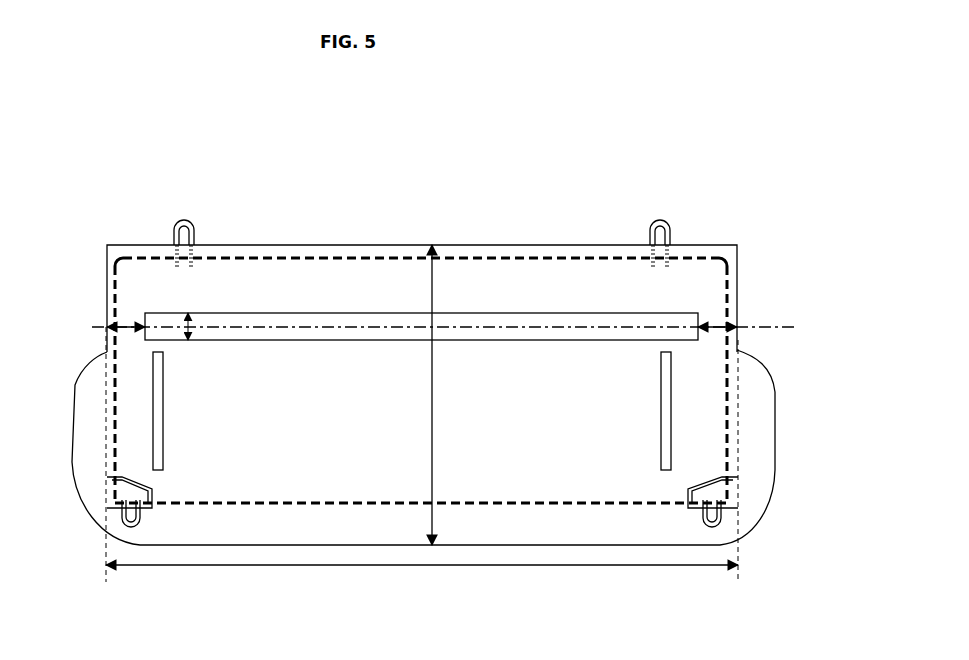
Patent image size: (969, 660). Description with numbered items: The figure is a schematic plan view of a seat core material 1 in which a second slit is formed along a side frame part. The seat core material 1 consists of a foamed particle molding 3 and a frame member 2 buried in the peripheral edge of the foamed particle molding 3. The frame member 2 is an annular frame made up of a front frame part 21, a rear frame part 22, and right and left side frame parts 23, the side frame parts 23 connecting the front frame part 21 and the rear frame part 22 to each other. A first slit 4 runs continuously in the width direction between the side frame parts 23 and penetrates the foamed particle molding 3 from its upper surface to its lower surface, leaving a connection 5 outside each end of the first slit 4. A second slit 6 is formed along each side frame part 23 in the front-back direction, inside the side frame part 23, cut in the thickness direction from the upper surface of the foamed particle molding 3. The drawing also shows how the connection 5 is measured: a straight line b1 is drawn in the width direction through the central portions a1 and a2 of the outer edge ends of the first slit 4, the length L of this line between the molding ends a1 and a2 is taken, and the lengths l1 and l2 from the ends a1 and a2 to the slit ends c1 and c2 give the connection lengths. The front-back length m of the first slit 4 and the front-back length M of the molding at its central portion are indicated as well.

The seat core material 1 is at (602, 226).
The frame member 2 is at (738, 248).
The foamed particle molding 3 is at (552, 445).
The first slit 4 is at (335, 318).
The connection 5 is at (128, 321).
The second slit 6 is at (158, 456).
The front frame part 21 is at (473, 505).
The rear frame part 22 is at (453, 257).
The side frame parts 23 is at (113, 425).
The end of the foamed particle molding a1 is at (107, 326).
The end of the foamed particle molding a2 is at (737, 325).
The straight line b1 is at (773, 327).
The end of the first slit c1 is at (142, 318).
The end of the first slit c2 is at (702, 322).
The length of the connection l1 is at (107, 352).
The length of the connection l2 is at (740, 357).
The length of the first slit in the front-back direction m is at (190, 338).
The length in the front-back direction M is at (443, 395).
The length of the straight line L is at (422, 461).